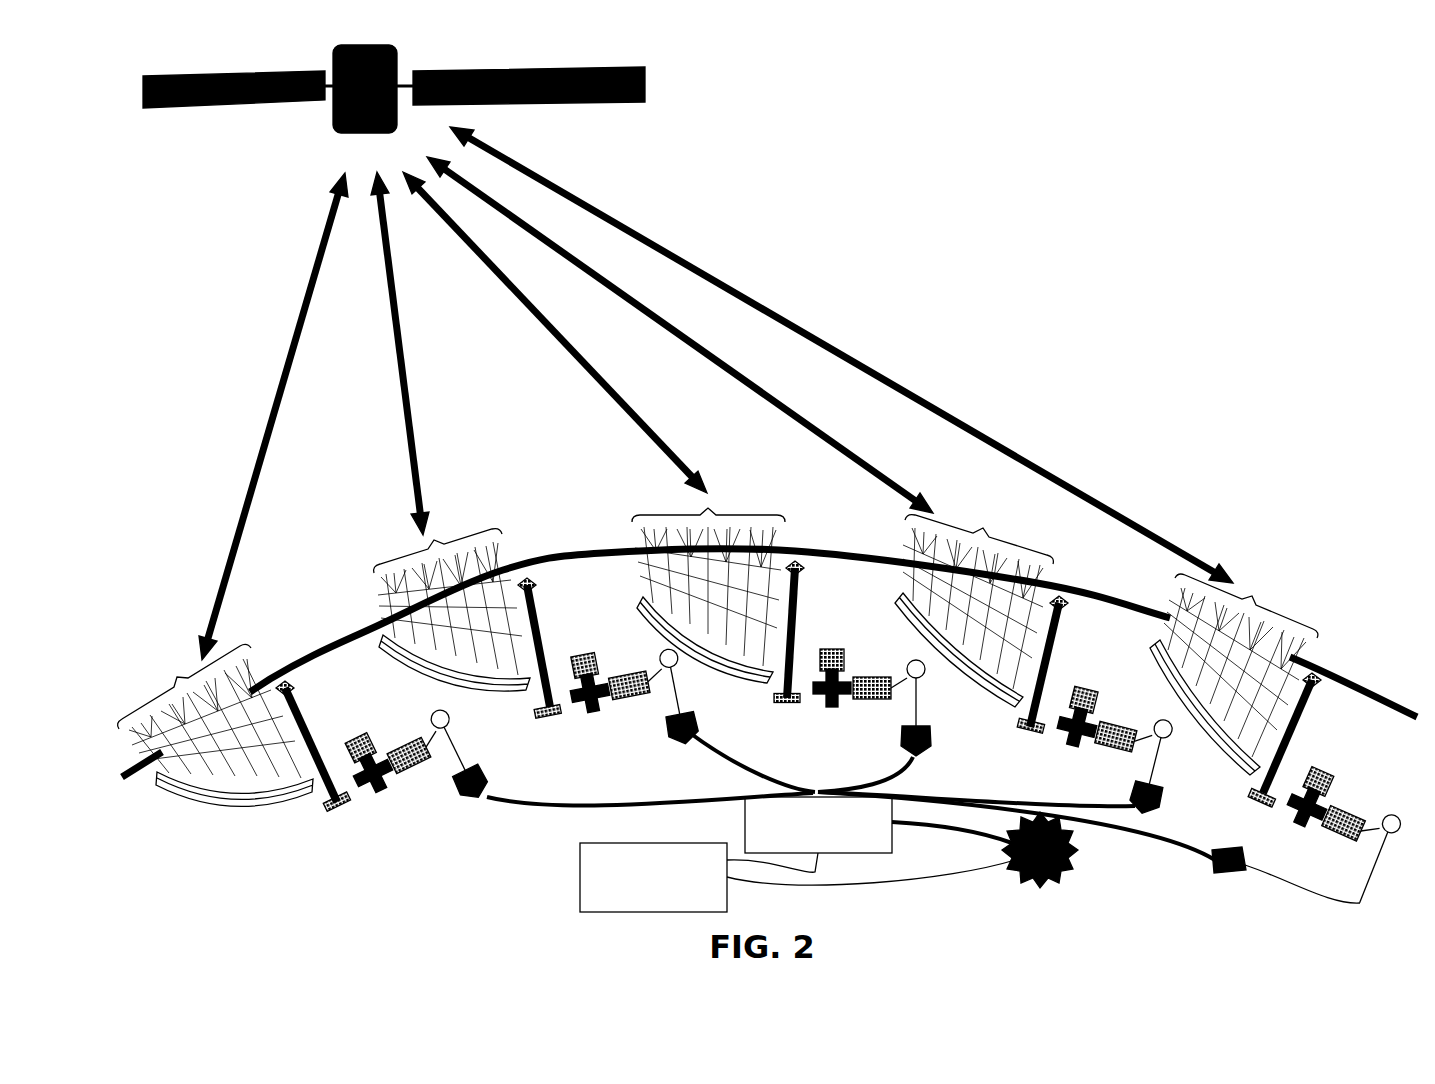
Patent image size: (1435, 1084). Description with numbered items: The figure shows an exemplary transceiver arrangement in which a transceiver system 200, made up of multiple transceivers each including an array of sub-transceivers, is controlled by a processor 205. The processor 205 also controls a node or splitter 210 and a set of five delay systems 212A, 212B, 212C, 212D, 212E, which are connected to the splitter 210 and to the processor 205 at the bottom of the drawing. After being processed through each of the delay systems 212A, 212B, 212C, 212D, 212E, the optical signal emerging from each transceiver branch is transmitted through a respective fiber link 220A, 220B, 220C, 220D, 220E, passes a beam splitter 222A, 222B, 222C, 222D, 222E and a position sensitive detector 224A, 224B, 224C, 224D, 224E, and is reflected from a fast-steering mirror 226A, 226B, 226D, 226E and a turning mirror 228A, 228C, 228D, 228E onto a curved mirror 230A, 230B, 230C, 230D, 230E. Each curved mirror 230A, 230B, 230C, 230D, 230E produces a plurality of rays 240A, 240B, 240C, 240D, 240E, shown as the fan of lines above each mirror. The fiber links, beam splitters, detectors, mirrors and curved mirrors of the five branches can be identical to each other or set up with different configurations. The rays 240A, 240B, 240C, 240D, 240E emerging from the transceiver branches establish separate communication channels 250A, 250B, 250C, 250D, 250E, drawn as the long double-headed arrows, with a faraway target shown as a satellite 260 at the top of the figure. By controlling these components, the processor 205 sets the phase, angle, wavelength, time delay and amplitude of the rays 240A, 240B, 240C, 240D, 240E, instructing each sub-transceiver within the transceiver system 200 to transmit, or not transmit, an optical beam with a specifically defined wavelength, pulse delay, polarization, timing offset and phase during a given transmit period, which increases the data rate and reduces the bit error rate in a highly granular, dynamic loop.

The transceiver system 200 is at (1023, 883).
The processor 205 is at (580, 874).
The node (or splitter) 210 is at (745, 803).
The delay system 212A is at (480, 800).
The delay system 212B is at (673, 730).
The delay system 212C is at (928, 738).
The delay system 212D is at (1162, 791).
The delay system 212E is at (1213, 866).
The fiber link 220A is at (405, 745).
The fiber link 220B is at (629, 672).
The fiber link 220C is at (873, 680).
The fiber link 220D is at (1120, 726).
The fiber link 220E is at (1355, 810).
The beam splitter 222A is at (378, 786).
The beam splitter 222B is at (592, 708).
The beam splitter 222C is at (783, 696).
The beam splitter 222D is at (1070, 741).
The beam splitter 222E is at (1301, 820).
The position sensitive detector (PSD) 224A is at (355, 740).
The position sensitive detector (PSD) 224B is at (585, 650).
The position sensitive detector (PSD) 224C is at (829, 650).
The position sensitive detector (PSD) 224D is at (1080, 684).
The position sensitive detector (PSD) 224E is at (1320, 768).
The fast-steering mirror (FSM) 226A is at (335, 806).
The fast-steering mirror (FSM) 226B is at (548, 713).
The fast-steering mirror (FSM) 226D is at (1020, 735).
The fast-steering mirror (FSM) 226E is at (1257, 800).
The turning mirror 228A is at (286, 680).
The turning mirror 228C is at (530, 575).
The turning mirror 228D is at (1060, 597).
The turning mirror 228E is at (1318, 673).
The curved mirror 230A is at (235, 798).
The curved mirror 230B is at (385, 635).
The curved mirror 230C is at (645, 596).
The curved mirror 230D is at (903, 593).
The curved mirror 230E is at (1160, 640).
The plurality of rays 240A is at (209, 694).
The plurality of rays 240B is at (448, 577).
The plurality of rays 240C is at (708, 560).
The plurality of rays 240D is at (978, 574).
The plurality of rays 240E is at (1241, 642).
The communication channel 250A is at (272, 430).
The communication channel 250B is at (407, 423).
The communication channel 250C is at (548, 330).
The communication channel 250D is at (807, 430).
The communication channel 250E is at (805, 328).
The satellite 260 is at (646, 86).